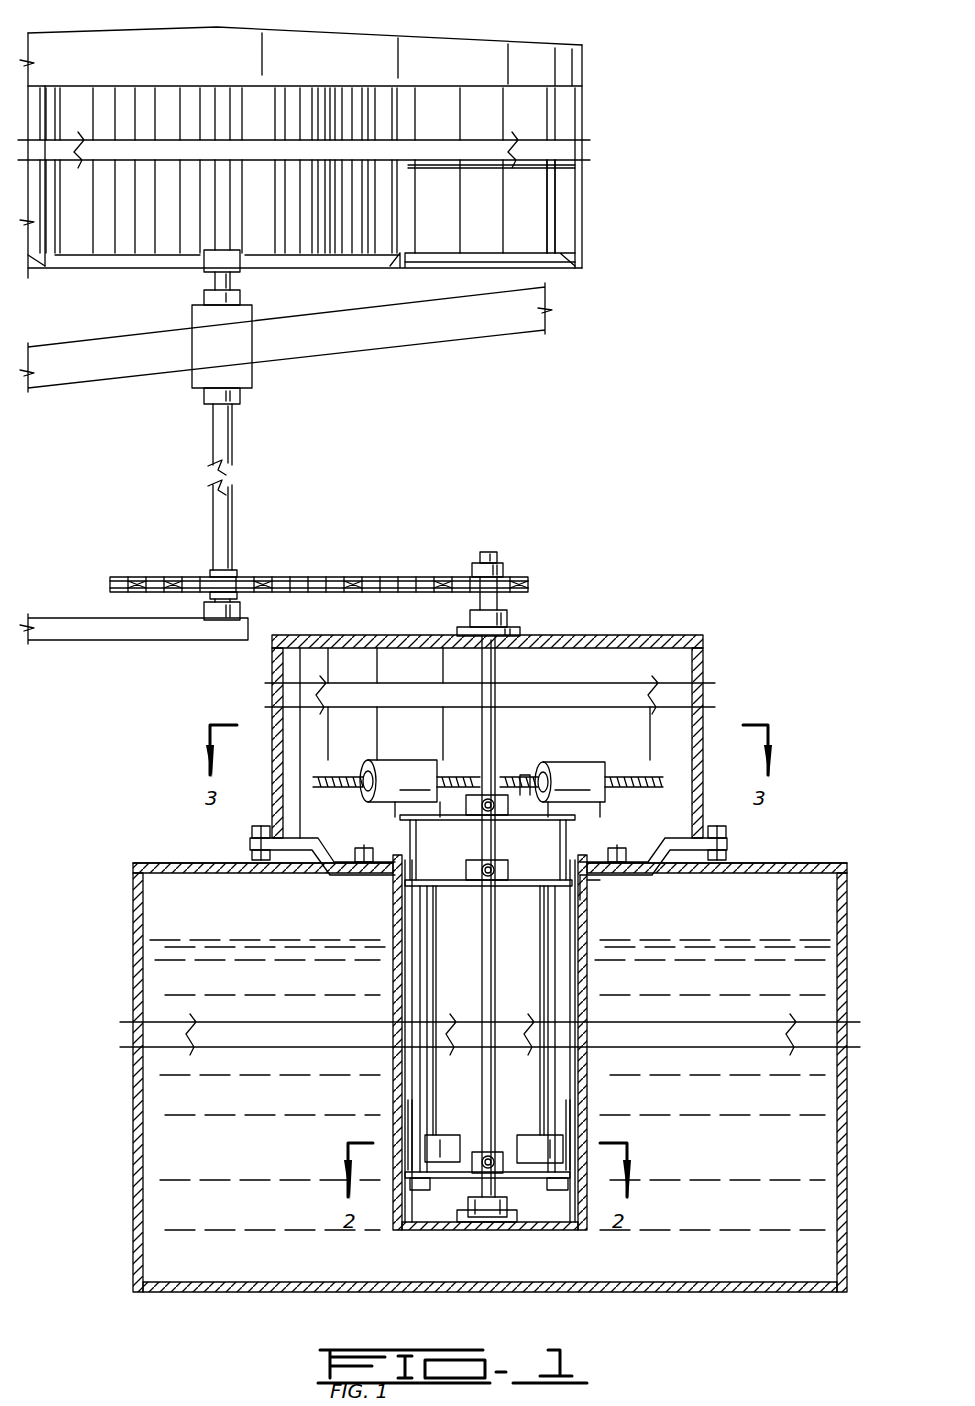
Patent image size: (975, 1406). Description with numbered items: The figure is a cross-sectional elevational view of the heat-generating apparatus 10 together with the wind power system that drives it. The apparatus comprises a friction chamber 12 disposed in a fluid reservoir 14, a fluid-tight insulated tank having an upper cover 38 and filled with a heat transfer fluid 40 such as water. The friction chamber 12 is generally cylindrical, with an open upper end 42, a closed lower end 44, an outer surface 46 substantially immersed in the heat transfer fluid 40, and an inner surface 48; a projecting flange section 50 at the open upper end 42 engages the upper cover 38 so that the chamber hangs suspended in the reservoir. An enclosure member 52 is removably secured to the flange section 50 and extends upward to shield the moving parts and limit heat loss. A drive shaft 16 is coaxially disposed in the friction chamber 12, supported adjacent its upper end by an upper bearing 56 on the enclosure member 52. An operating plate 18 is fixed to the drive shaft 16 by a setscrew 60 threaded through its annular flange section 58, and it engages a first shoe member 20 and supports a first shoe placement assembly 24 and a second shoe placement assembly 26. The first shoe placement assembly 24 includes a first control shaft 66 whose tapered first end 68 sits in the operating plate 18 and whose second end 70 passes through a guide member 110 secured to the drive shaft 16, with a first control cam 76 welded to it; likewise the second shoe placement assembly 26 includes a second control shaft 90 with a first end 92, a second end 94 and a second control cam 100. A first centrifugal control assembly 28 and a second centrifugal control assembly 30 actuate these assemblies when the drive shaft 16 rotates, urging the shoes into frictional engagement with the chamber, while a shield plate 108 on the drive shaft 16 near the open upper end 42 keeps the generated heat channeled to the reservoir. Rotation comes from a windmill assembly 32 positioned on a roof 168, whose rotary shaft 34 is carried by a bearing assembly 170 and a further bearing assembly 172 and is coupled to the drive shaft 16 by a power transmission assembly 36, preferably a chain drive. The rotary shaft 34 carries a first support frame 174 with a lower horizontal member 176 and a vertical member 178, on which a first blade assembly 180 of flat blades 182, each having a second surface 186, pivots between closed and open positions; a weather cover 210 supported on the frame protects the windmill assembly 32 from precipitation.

The heat-generating apparatus 10 is at (754, 570).
The friction chamber 12 is at (392, 910).
The fluid reservoir 14 is at (128, 880).
The drive shaft 16 is at (500, 661).
The operating plate 18 is at (528, 1182).
The first shoe member 20 is at (440, 1140).
The first shoe placement assembly 24 is at (425, 1185).
The second shoe placement assembly 26 is at (555, 1185).
The first centrifugal control assembly 28 is at (592, 762).
The second centrifugal control assembly 30 is at (411, 762).
The windmill assembly 32 is at (366, 157).
The rotary shaft 34 is at (233, 527).
The power transmission assembly 36 is at (328, 568).
The upper cover 38 is at (173, 862).
The heat transfer fluid 40 is at (200, 940).
The open upper end 42 is at (565, 870).
The closed lower end 44 is at (570, 1226).
The outer surface 46 is at (592, 920).
The inner surface 48 is at (585, 896).
The flange section 50 is at (305, 840).
The enclosure member 52 is at (705, 653).
The upper bearing 56 is at (508, 620).
The annular flange section 58 is at (530, 1140).
The setscrew 60 is at (485, 1168).
The first control shaft 66 is at (422, 986).
The first end 68 is at (420, 1165).
The second end 70 is at (425, 826).
The first control cam 76 is at (455, 1040).
The second control shaft 90 is at (550, 975).
The first end 92 is at (570, 1160).
The second end 94 is at (575, 832).
The second control cam 100 is at (540, 1030).
The shield plate 108 is at (525, 890).
The guide member 110 is at (518, 790).
The roof 168 is at (517, 320).
The bearing assembly 170 is at (252, 368).
The bearing assembly 172 is at (243, 610).
The first support frame 174 is at (582, 258).
The lower horizontal member 176 is at (565, 272).
The vertical member 178 is at (568, 209).
The first blade assembly 180 is at (560, 178).
The flat blades 182 is at (528, 243).
The second surface 186 is at (546, 212).
The weather cover 210 is at (110, 38).